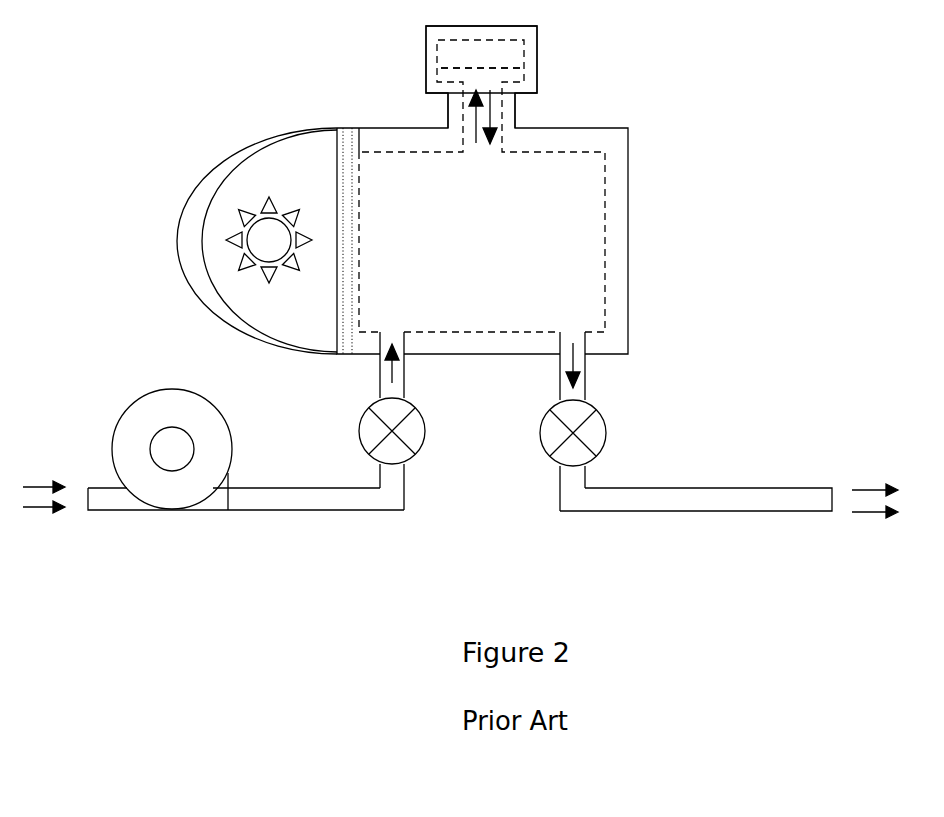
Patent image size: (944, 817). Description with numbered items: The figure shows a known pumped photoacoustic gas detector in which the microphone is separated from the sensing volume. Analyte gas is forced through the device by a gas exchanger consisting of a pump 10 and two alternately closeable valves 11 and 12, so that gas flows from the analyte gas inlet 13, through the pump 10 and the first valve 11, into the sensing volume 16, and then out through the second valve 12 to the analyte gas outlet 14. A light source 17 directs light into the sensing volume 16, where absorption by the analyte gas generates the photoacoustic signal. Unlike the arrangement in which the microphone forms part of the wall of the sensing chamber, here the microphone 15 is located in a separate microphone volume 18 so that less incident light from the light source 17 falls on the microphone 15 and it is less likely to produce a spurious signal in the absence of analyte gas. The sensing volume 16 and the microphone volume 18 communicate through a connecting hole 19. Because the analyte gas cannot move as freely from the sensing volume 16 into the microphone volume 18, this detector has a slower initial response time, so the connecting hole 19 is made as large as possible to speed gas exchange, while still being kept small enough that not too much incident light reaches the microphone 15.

The pump 10 is at (138, 421).
The alternately closeable valve 11 is at (370, 430).
The alternately closeable valve 12 is at (595, 433).
The analyte gas inlet 13 is at (87, 498).
The analyte gas outlet 14 is at (841, 502).
The microphone 15 is at (463, 52).
The sensing volume 16 is at (455, 267).
The light source 17 is at (267, 236).
The microphone volume 18 is at (520, 70).
The connecting hole 19 is at (498, 110).